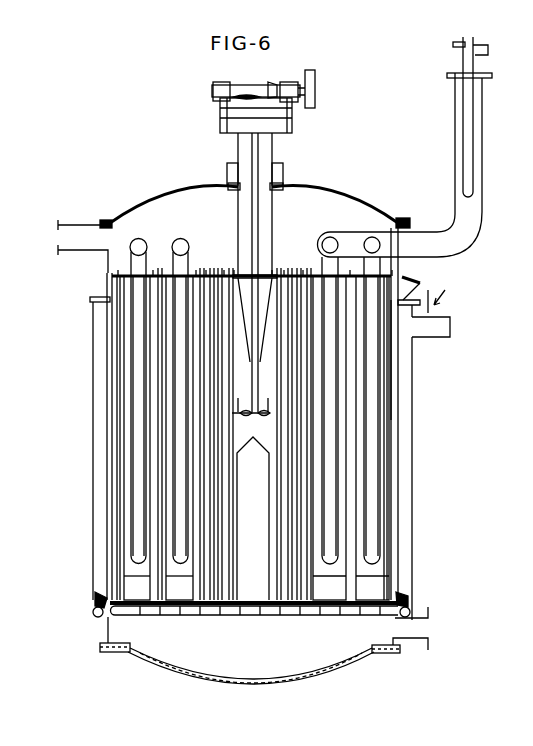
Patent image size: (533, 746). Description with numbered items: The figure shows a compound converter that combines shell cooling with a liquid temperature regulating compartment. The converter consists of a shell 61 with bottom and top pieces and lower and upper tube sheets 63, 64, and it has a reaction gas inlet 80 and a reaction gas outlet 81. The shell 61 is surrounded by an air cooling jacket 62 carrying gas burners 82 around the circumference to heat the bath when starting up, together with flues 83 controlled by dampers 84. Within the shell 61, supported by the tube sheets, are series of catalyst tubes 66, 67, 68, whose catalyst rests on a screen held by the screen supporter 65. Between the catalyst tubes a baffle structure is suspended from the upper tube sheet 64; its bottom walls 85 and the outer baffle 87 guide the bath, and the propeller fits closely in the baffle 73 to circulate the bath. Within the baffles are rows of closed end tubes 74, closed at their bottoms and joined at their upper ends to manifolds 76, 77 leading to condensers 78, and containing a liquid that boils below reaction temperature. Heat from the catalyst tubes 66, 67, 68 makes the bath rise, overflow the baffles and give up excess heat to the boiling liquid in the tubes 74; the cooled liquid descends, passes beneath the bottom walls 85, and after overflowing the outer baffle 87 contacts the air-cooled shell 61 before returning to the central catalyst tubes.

The shell 61 is at (397, 442).
The air cooling jacket 62 is at (412, 465).
The lower tube sheet 63 is at (237, 275).
The upper tube sheet 64 is at (332, 607).
The screen supporter 65 is at (348, 615).
The catalyst tube 66 is at (293, 277).
The catalyst tube 67 is at (352, 262).
The catalyst tube 68 is at (386, 273).
The baffle 73 is at (238, 400).
The closed end tube 74 is at (262, 372).
The manifold 76 is at (330, 237).
The manifold 77 is at (372, 237).
The condenser 78 is at (482, 125).
The reaction gas inlet 80 is at (83, 240).
The reaction gas outlet 81 is at (408, 632).
The gas burner 82 is at (410, 607).
The flue 83 is at (440, 317).
The damper 84 is at (445, 288).
The bottom wall 85 is at (180, 575).
The outer baffle 87 is at (393, 362).